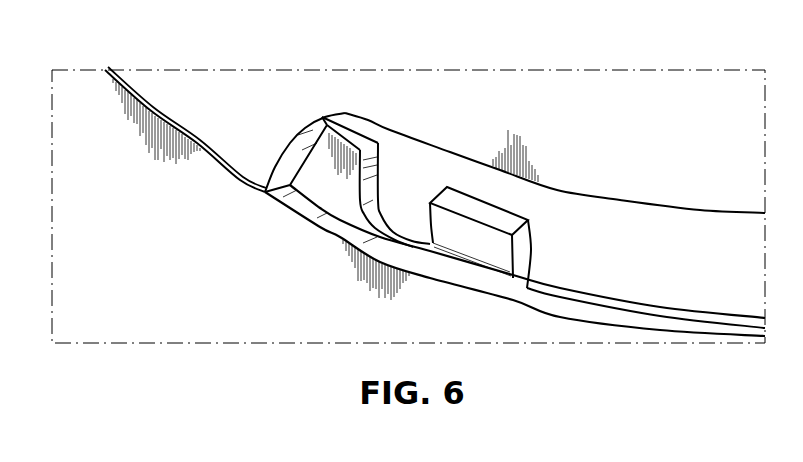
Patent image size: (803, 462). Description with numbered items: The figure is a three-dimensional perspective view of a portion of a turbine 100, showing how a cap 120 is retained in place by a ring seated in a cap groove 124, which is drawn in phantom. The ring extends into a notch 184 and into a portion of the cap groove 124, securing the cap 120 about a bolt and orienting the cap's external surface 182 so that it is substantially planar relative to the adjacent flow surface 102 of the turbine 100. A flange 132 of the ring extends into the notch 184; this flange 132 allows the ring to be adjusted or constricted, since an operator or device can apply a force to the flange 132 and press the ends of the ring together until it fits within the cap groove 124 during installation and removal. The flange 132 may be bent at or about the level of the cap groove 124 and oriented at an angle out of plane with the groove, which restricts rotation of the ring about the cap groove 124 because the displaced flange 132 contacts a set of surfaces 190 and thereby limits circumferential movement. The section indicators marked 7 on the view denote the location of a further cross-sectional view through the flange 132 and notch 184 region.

The turbine 100 is at (163, 312).
The flow surface 102 is at (82, 129).
The cap groove 124 is at (225, 107).
The cap 120 is at (335, 95).
The set of surfaces 190 is at (295, 155).
The notch 184 is at (624, 233).
The external surface 182 is at (668, 136).
The flange 132 is at (465, 249).
The section line 7 is at (487, 150).